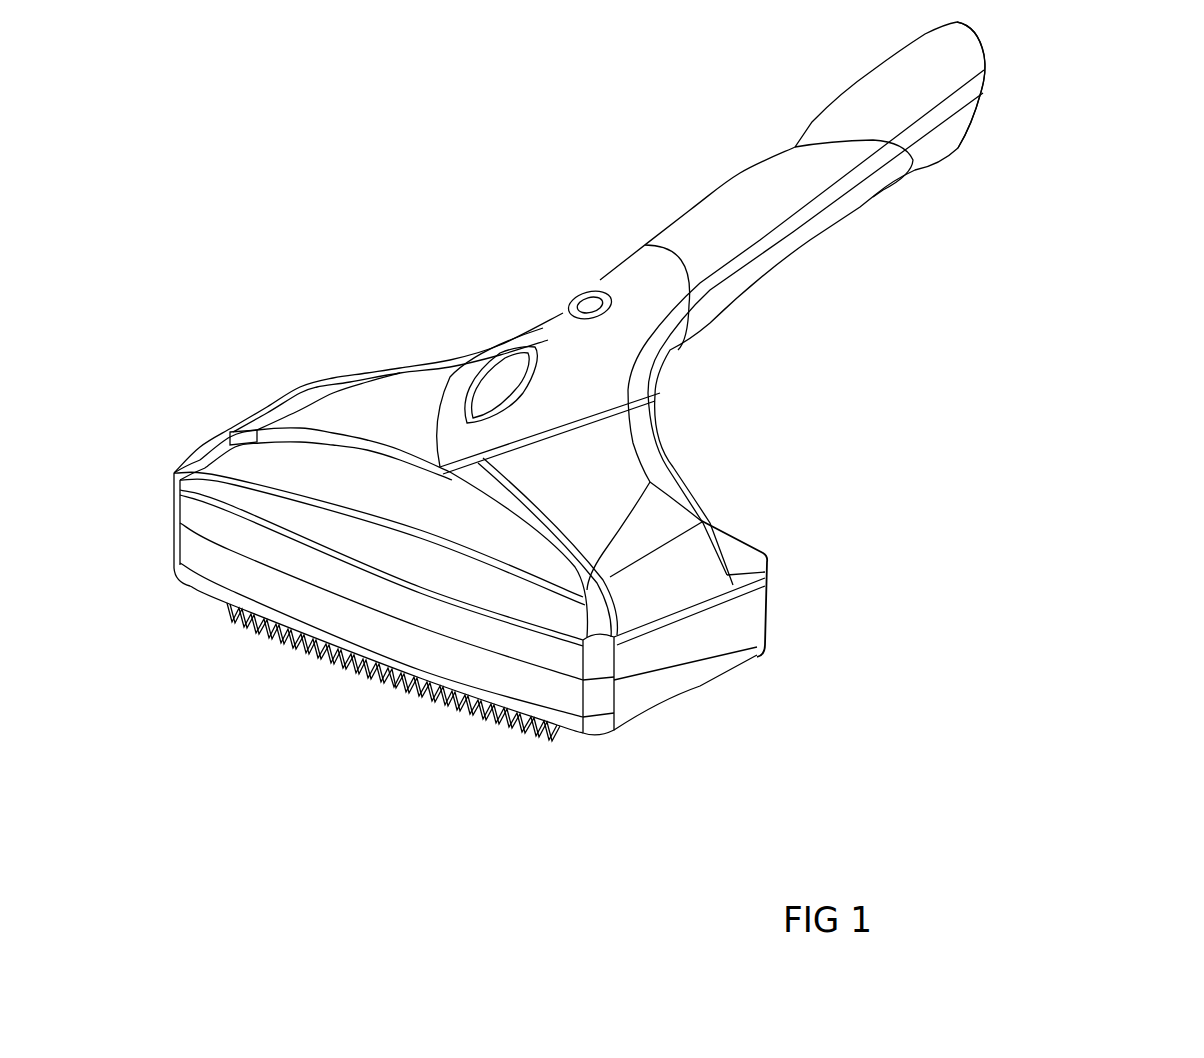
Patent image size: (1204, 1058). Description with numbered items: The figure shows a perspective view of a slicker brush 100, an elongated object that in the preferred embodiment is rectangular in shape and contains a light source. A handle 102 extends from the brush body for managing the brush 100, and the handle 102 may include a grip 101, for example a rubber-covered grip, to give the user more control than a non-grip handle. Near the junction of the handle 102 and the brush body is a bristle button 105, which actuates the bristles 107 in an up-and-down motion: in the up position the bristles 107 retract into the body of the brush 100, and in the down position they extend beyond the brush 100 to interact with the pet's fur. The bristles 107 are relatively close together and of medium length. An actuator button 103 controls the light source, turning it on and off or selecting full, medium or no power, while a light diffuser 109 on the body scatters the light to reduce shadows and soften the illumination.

The slicker brush 100 is at (1061, 403).
The grip 101 is at (752, 211).
The handle 102 is at (965, 150).
The actuator button 103 is at (598, 303).
The bristle button 105 is at (508, 372).
The bristles 107 is at (562, 733).
The light diffuser 109 is at (427, 565).